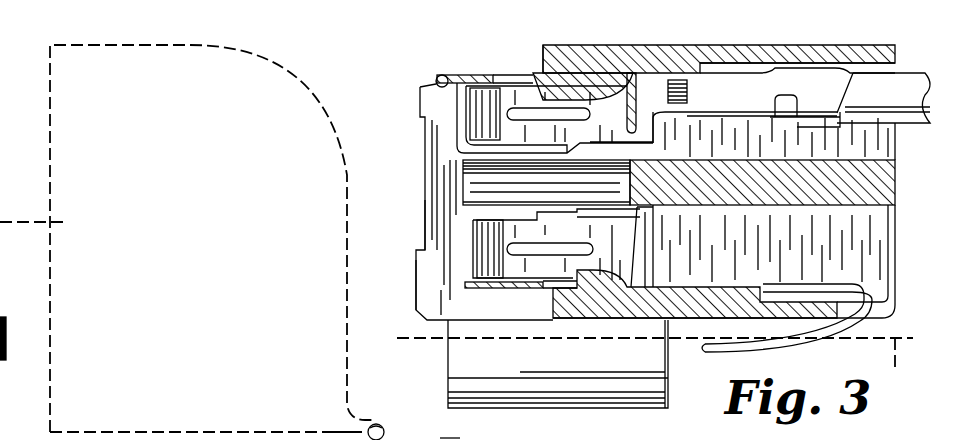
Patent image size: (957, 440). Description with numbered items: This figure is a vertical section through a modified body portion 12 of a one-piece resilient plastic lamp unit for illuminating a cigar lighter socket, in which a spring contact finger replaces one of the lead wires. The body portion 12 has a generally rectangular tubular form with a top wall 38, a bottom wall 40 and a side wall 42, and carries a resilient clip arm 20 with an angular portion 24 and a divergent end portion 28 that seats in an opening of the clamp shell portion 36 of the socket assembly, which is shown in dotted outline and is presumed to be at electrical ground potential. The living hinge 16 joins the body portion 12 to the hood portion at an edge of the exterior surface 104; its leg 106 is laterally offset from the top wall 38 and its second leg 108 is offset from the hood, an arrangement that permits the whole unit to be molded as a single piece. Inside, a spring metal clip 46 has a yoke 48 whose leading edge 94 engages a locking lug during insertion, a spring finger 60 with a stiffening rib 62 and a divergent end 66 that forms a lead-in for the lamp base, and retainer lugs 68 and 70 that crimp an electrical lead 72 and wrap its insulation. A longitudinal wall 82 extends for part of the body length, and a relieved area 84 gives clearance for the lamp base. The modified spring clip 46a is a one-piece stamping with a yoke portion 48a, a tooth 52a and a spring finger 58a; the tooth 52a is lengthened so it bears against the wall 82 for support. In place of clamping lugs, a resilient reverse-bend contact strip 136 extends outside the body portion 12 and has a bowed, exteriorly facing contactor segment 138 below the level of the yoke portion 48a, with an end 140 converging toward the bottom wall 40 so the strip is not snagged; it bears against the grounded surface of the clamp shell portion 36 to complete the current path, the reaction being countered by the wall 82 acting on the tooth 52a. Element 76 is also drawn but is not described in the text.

The body portion 12 is at (390, 108).
The living hinge 16 is at (381, 414).
The resilient clip arm 20 is at (46, 151).
The angular portion 24 is at (455, 355).
The divergent end portion 28 is at (540, 390).
The clamp shell portion 36 is at (655, 366).
The top wall 38 is at (880, 60).
The bottom wall 40 is at (688, 320).
The side wall 42 is at (886, 234).
The spring metal clip 46 is at (452, 125).
The modified spring clip 46a is at (462, 253).
The yoke 48 is at (485, 74).
The yoke portion 48a is at (533, 290).
The tooth 52a is at (633, 252).
The spring finger 58a is at (560, 222).
The spring finger 60 is at (528, 96).
The longitudinal stiffening rib 62 is at (571, 103).
The divergent end 66 is at (478, 108).
The wrap-around retainer lug 68 is at (728, 98).
The retainer lug 70 is at (817, 100).
The electrical lead 72 is at (913, 125).
The member 76 is at (450, 435).
The longitudinal wall 82 is at (888, 192).
The relieved area 84 is at (478, 194).
The leading edge 94 is at (438, 76).
The exterior surface 104 is at (420, 222).
The hinge leg 106 is at (392, 437).
The second hinge leg 108 is at (360, 437).
The reverse-bend contact strip 136 is at (875, 280).
The contactor segment 138 is at (795, 345).
The strip end 140 is at (727, 352).